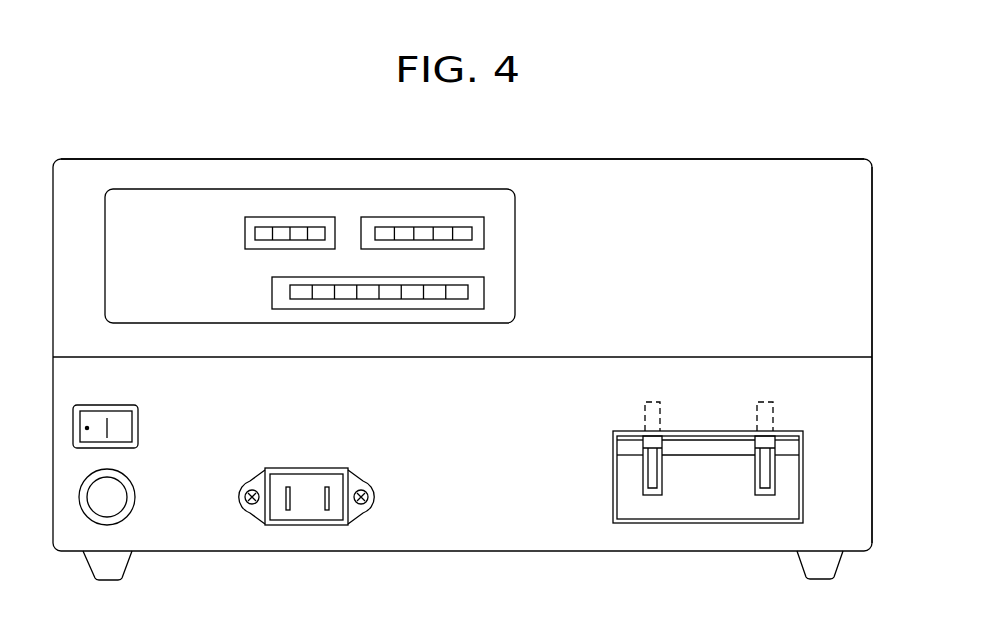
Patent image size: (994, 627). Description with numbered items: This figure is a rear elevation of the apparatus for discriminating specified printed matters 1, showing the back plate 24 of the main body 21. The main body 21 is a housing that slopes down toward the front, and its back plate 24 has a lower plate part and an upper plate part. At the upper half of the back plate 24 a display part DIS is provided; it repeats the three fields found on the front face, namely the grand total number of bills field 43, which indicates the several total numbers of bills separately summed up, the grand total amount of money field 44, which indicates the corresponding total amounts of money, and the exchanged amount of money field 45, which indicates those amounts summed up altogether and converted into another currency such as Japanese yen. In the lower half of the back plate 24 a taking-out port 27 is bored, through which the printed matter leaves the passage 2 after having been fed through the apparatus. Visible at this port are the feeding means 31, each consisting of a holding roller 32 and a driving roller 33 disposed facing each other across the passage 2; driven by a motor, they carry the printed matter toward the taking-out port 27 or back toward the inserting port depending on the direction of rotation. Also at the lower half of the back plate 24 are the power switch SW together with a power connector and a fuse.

The apparatus for discriminating specified printed matters 1 is at (193, 155).
The main body 21 is at (745, 155).
The back plate 24 is at (853, 280).
The display part DIS is at (525, 210).
The grand total number of bills field 43 is at (300, 187).
The grand total amount of money field 44 is at (467, 207).
The exchanged amount of money field 45 is at (497, 300).
The power switch SW is at (124, 421).
The taking-out port 27 is at (628, 527).
The passage 2 is at (720, 450).
The feeding means 31 is at (820, 337).
The holding roller 32 is at (767, 442).
The driving roller 33 is at (765, 475).